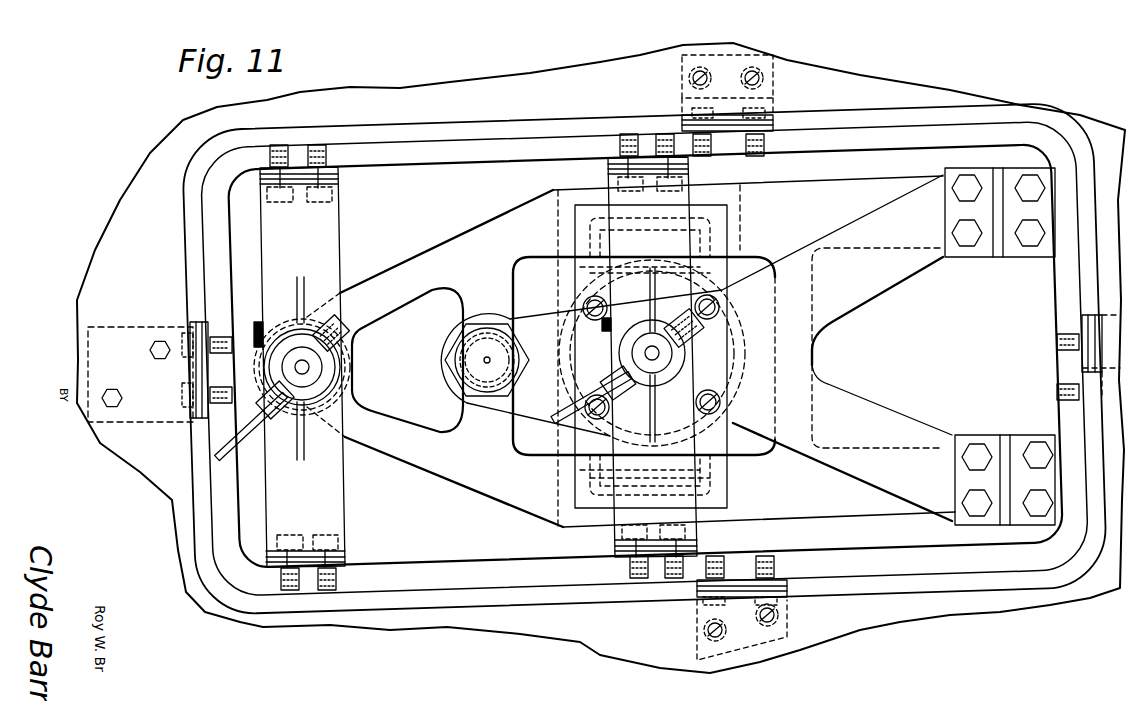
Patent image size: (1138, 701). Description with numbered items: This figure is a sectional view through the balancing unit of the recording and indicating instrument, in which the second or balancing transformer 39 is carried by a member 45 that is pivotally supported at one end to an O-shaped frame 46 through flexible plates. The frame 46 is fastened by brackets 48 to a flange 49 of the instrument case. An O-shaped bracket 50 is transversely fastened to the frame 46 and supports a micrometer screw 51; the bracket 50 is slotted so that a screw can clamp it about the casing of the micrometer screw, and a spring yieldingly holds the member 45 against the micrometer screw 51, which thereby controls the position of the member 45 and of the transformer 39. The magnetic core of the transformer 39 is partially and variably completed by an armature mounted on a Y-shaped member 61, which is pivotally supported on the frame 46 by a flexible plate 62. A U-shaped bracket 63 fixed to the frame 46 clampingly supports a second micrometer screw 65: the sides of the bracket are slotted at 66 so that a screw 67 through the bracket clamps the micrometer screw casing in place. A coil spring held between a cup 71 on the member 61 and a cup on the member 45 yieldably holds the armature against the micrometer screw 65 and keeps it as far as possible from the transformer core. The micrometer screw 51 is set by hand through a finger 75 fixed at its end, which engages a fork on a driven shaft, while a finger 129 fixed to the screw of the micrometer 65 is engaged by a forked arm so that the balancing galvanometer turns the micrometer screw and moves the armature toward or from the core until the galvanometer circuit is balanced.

The second or balancing transformer 39 is at (760, 260).
The member 45 is at (455, 240).
The O-shaped frame 46 is at (963, 560).
The brackets 48 is at (107, 324).
The flange 49 is at (582, 644).
The O-shaped bracket 50 is at (360, 493).
The micrometer screw 51 is at (318, 370).
The Y-shaped member 61 is at (870, 407).
The flexible plate 62 is at (1001, 258).
The U-shaped bracket 63 is at (688, 182).
The micrometer screw 65 is at (690, 362).
The slot 66 is at (578, 291).
The screw 67 is at (600, 327).
The cup 71 is at (452, 362).
The finger 75 is at (258, 432).
The finger 129 is at (567, 425).